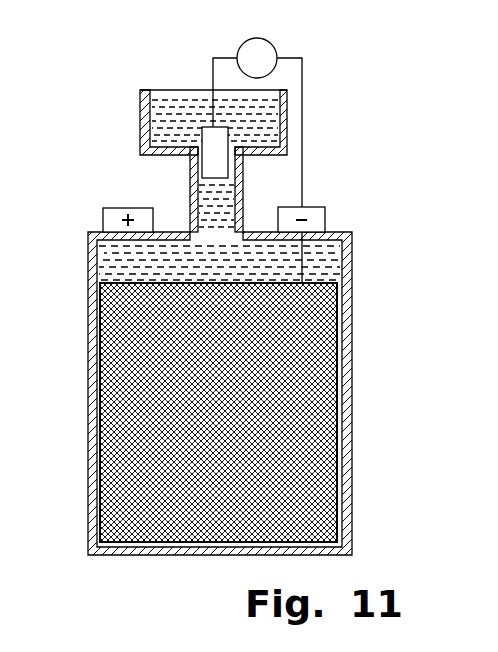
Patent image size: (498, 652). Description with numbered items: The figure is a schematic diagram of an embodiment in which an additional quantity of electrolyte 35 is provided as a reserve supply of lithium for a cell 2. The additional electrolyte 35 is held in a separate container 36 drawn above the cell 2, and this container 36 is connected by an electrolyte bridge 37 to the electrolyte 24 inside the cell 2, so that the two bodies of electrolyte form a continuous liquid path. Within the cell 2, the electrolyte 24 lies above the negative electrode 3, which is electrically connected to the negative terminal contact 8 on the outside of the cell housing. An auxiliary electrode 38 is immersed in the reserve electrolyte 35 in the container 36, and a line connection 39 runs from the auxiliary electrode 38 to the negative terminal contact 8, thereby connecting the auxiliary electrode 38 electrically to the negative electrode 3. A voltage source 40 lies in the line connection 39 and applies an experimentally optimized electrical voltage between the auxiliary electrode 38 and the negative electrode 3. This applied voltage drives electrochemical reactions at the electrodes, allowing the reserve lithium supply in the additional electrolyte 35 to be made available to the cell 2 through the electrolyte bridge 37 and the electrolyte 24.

The cell 2 is at (342, 292).
The negative electrode 3 is at (303, 380).
The negative terminal contact 8 is at (325, 212).
The electrolyte 24 is at (110, 255).
The additional quantity of electrolyte 35 is at (167, 113).
The container 36 is at (142, 133).
The electrolyte bridge 37 is at (190, 196).
The auxiliary electrode 38 is at (210, 143).
The line connection 39 is at (302, 127).
The voltage source 40 is at (271, 43).